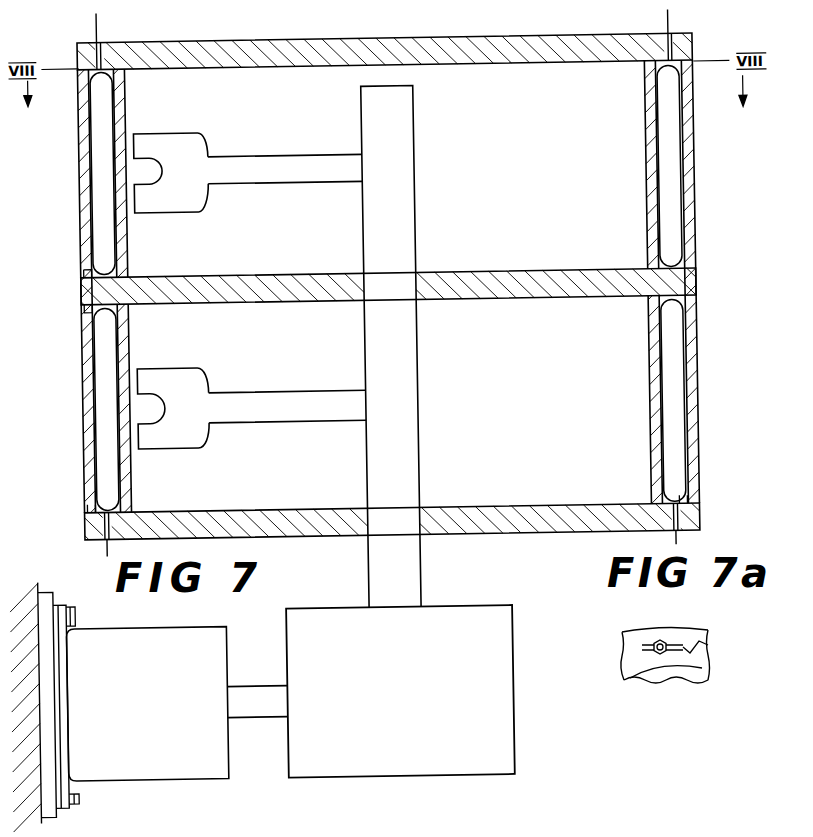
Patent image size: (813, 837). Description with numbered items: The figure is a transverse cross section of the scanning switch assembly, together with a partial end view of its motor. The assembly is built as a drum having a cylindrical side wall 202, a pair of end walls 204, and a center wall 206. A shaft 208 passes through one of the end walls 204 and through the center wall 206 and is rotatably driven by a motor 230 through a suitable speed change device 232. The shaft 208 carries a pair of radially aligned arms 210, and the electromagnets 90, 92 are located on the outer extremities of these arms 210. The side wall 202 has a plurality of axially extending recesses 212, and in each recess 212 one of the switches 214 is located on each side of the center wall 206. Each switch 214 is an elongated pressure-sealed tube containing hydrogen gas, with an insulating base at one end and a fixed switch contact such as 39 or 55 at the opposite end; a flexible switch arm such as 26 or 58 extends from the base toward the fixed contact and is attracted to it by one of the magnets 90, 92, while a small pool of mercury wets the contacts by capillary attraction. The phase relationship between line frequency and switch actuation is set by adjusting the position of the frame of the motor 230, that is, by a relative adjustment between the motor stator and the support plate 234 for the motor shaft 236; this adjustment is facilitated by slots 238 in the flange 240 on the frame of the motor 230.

In FIG. 7, the fixed switch contact 39 is at (103, 36).
In FIG. 7, the end wall 204 is at (583, 38).
In FIG. 7, the cylindrical side wall 202 is at (697, 160).
In FIG. 7, the switch 214 is at (672, 227).
In FIG. 7, the center wall 206 is at (530, 276).
In FIG. 7, the shaft 208 is at (416, 371).
In FIG. 7, the arm 210 is at (297, 154).
In FIG. 7, the electromagnet 90 is at (196, 132).
In FIG. 7, the electromagnet 92 is at (196, 375).
In FIG. 7, the flexible switch arm 26 is at (84, 270).
In FIG. 7, the flexible switch arm 58 is at (84, 306).
In FIG. 7, the recess 212 is at (92, 506).
In FIG. 7, the fixed switch contact 55 is at (103, 550).
In FIG. 7, the motor 230 is at (146, 702).
In FIG. 7, the speed change device 232 is at (409, 706).
In FIG. 7, the motor shaft 236 is at (250, 717).
In FIG. 7, the flange 240 is at (72, 619).
In FIG. 7A, the flange 240 is at (705, 670).
In FIG. 7, the support plate 234 is at (70, 802).
In FIG. 7A, the slot 238 is at (708, 645).